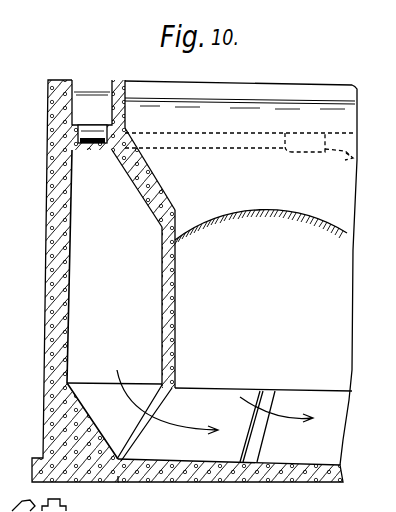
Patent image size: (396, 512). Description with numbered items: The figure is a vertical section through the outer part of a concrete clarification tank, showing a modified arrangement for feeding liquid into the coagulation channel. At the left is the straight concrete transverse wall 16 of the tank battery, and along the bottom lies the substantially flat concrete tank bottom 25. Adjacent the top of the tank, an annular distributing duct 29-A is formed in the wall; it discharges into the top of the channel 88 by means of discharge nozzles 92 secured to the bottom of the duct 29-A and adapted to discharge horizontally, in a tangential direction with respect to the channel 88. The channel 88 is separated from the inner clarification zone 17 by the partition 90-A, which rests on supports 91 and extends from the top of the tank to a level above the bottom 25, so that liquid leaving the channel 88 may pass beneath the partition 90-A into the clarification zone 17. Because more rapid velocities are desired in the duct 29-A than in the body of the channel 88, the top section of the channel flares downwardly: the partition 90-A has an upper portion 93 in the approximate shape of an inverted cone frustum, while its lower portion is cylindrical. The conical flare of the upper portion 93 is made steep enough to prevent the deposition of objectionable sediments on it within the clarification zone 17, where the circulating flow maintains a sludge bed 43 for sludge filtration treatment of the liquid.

The transverse wall 16 is at (46, 311).
The clarification zone 17 is at (288, 274).
The concrete tank bottom 25 is at (283, 480).
The annular distributing duct 29-A is at (96, 104).
The sludge bed 43 is at (280, 211).
The coagulation channel 88 is at (127, 285).
The partition 90-A is at (176, 294).
The supports 91 is at (258, 440).
The discharge nozzles 92 is at (93, 143).
The upper portion of partition 93 is at (153, 201).